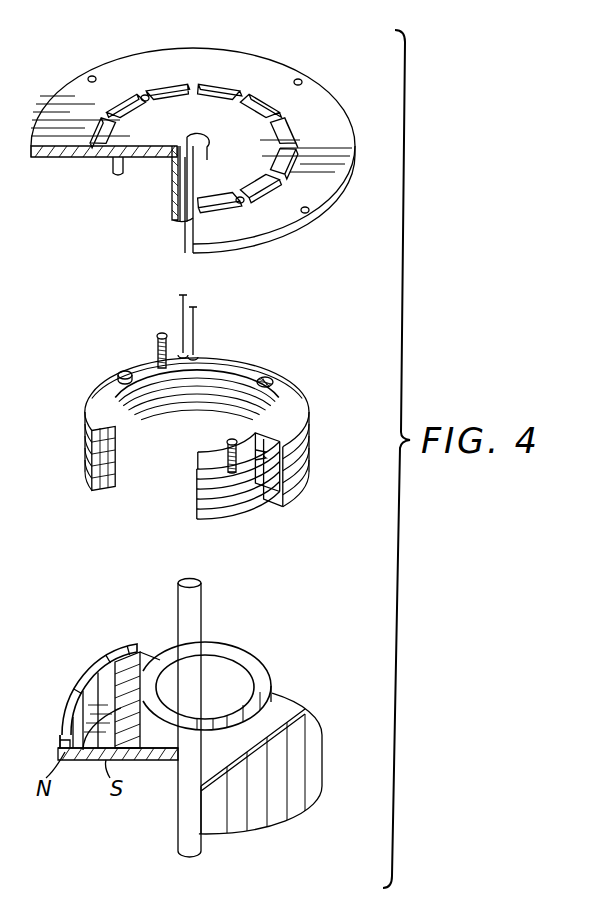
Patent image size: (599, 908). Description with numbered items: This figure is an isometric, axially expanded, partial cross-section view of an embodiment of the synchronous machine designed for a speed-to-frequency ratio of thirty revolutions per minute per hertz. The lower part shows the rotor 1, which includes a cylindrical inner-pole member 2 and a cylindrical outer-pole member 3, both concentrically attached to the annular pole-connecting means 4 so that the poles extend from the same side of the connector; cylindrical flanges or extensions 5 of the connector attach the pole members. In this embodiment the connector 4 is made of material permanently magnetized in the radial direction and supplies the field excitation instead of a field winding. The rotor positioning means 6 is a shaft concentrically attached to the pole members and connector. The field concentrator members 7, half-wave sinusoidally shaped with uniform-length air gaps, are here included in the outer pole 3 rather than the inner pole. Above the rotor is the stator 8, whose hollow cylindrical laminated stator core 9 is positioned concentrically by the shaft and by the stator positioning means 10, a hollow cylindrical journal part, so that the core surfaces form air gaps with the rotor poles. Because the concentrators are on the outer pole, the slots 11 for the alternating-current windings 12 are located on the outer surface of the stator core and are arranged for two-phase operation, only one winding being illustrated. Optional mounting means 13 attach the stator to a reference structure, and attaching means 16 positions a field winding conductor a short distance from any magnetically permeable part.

The rotor 1 is at (58, 693).
The inner-pole member 2 is at (147, 655).
The outer-pole member 3 is at (334, 750).
The pole-connecting means 4 is at (88, 760).
The cylindrical flanges or extensions 5 is at (124, 748).
The rotor positioning means 6 is at (190, 580).
The field concentrator members 7 is at (88, 662).
The stator 8 is at (104, 58).
The stator core 9 is at (293, 395).
The stator positioning means 10 is at (175, 185).
The slots 11 is at (300, 462).
The alternating-current windings 12 is at (187, 316).
The mounting means 13 is at (308, 211).
The attaching means 16 is at (157, 347).